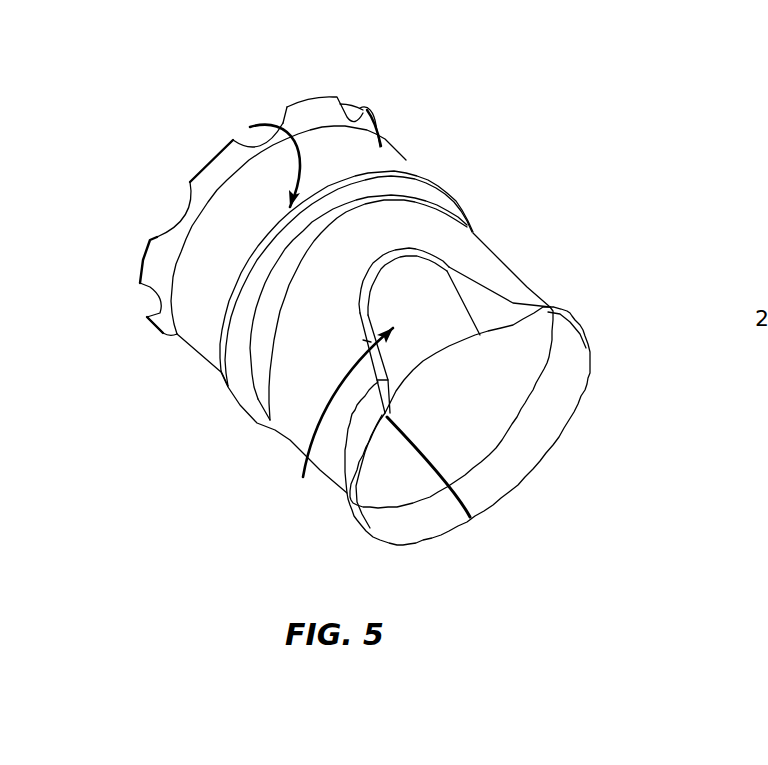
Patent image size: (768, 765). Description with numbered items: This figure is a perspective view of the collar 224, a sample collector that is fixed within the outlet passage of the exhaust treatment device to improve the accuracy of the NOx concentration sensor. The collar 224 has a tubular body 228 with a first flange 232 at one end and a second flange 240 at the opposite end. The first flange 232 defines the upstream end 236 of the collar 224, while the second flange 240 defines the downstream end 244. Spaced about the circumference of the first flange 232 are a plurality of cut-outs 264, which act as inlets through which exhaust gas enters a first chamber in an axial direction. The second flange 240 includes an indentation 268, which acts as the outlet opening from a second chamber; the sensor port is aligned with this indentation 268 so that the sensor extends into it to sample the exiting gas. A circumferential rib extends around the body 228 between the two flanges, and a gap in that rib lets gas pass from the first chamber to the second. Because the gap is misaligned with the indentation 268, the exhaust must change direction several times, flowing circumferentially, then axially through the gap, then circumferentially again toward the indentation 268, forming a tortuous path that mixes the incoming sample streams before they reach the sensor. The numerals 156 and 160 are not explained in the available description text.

The coupling flange 156 is at (190, 353).
The tubular body 160 is at (283, 450).
The collar 224 is at (477, 117).
The tubular body 228 is at (457, 297).
The first flange 232 is at (393, 160).
The upstream end 236 is at (207, 161).
The second flange 240 is at (570, 367).
The downstream end 244 is at (540, 460).
The cut-outs 264 is at (212, 282).
The indentation 268 is at (437, 335).